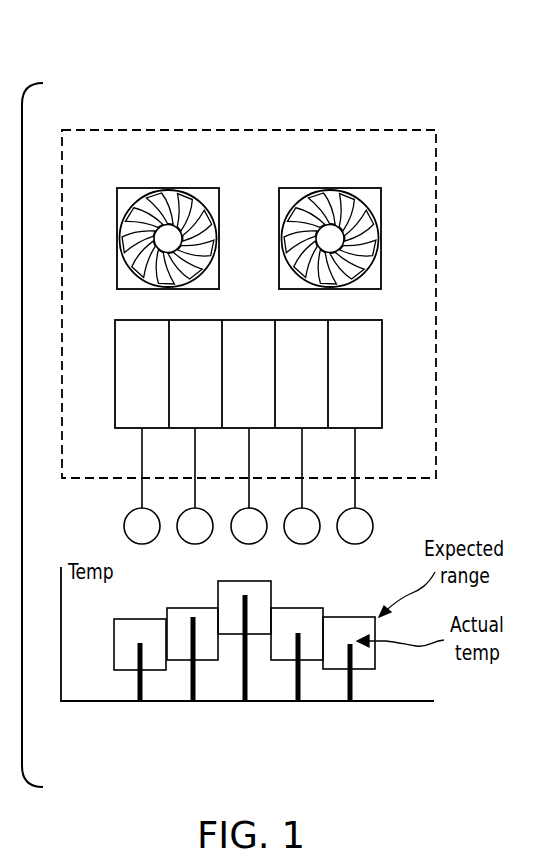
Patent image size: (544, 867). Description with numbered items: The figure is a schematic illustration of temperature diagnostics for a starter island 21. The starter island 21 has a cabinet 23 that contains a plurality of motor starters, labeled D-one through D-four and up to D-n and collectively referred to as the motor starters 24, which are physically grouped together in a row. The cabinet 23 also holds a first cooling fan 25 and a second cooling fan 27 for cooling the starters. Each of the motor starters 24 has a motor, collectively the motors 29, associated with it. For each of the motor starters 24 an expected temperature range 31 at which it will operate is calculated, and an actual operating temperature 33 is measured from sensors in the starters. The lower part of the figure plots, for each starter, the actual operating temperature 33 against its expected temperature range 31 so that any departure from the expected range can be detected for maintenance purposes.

The starter island 21 is at (286, 117).
The cabinet 23 is at (400, 129).
The motor starters 24 is at (392, 374).
The first cooling fan 25 is at (219, 225).
The second cooling fan 27 is at (381, 225).
The motors 29 is at (388, 517).
The expected temperature range 31 is at (218, 581).
The actual operating temperature 33 is at (143, 685).